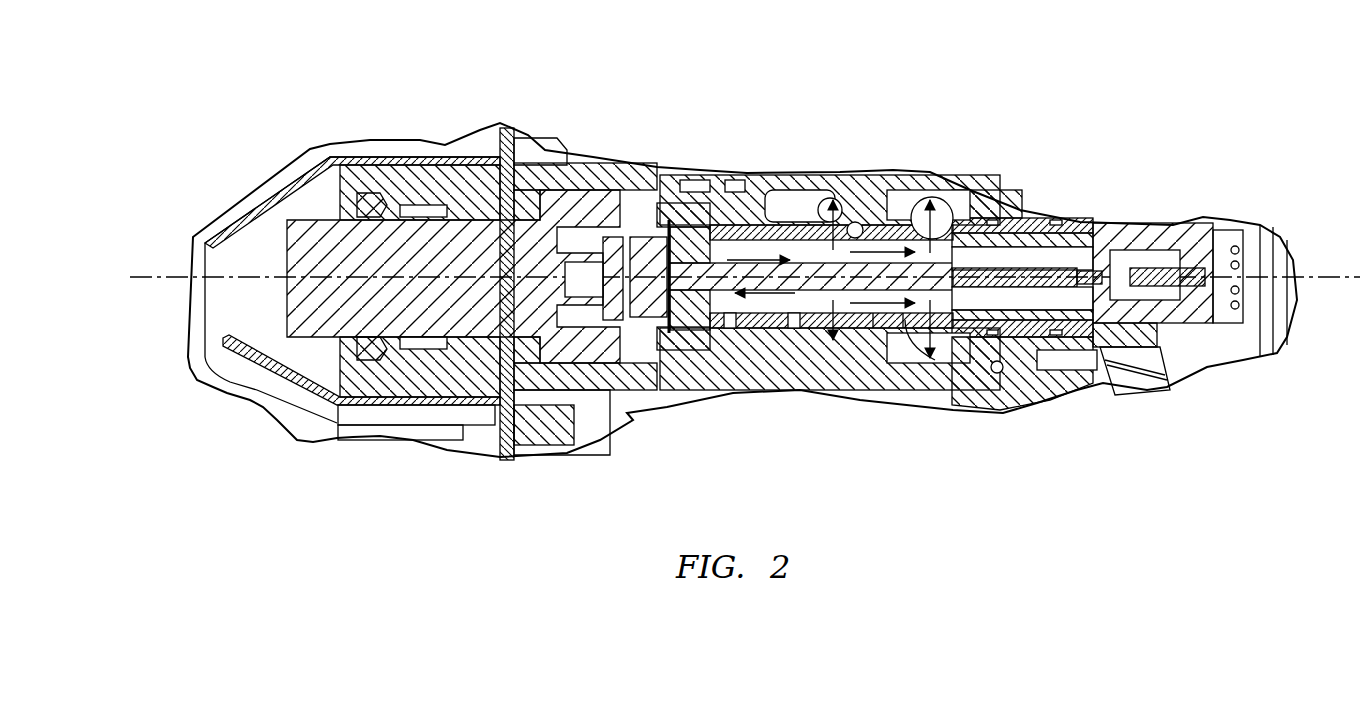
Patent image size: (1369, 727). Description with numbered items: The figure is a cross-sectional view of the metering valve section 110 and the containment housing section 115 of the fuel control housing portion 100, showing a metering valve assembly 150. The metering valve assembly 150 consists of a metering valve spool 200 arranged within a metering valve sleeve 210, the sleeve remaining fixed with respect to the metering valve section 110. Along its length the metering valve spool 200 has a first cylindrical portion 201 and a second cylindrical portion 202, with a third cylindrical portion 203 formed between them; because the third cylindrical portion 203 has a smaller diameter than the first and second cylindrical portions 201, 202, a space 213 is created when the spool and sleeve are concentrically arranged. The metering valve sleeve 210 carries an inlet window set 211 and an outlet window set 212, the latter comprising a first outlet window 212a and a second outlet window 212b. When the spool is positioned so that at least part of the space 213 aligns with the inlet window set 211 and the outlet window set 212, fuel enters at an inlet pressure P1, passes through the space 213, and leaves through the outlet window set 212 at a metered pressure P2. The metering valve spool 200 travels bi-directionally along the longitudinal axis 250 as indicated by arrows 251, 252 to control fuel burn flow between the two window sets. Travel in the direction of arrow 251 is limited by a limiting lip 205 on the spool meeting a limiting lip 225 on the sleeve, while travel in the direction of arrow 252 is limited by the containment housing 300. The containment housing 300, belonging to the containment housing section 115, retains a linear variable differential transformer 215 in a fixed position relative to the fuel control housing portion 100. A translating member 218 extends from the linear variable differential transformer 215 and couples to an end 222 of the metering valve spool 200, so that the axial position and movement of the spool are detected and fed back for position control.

The containment housing section 115 is at (290, 118).
The containment housing 300 is at (418, 162).
The linear variable differential transformer (LVDT) 215 is at (362, 256).
The fuel control housing portion 100 is at (550, 372).
The metering valve spool 200 is at (705, 310).
The metering valve section 110 is at (893, 117).
The first cylindrical portion 201 is at (760, 332).
The metering valve sleeve 210 is at (860, 300).
The arrow 251 is at (783, 190).
The inlet window set 211 is at (832, 190).
The inlet pressure P1 is at (857, 190).
The metered pressure P2 is at (920, 190).
The second outlet window 212b is at (945, 187).
The outlet window set 212 is at (985, 205).
The first outlet window 212a is at (935, 300).
The space 213 is at (873, 303).
The third cylindrical portion 203 is at (903, 312).
The arrow 252 is at (793, 330).
The limiting lip 225 is at (730, 330).
The translating member 218 is at (660, 360).
The end 222 is at (650, 176).
The limiting lip 205 is at (697, 180).
The metering valve assembly 150 is at (735, 180).
The longitudinal axis 250 is at (1303, 240).
The second cylindrical portion 202 is at (1085, 390).